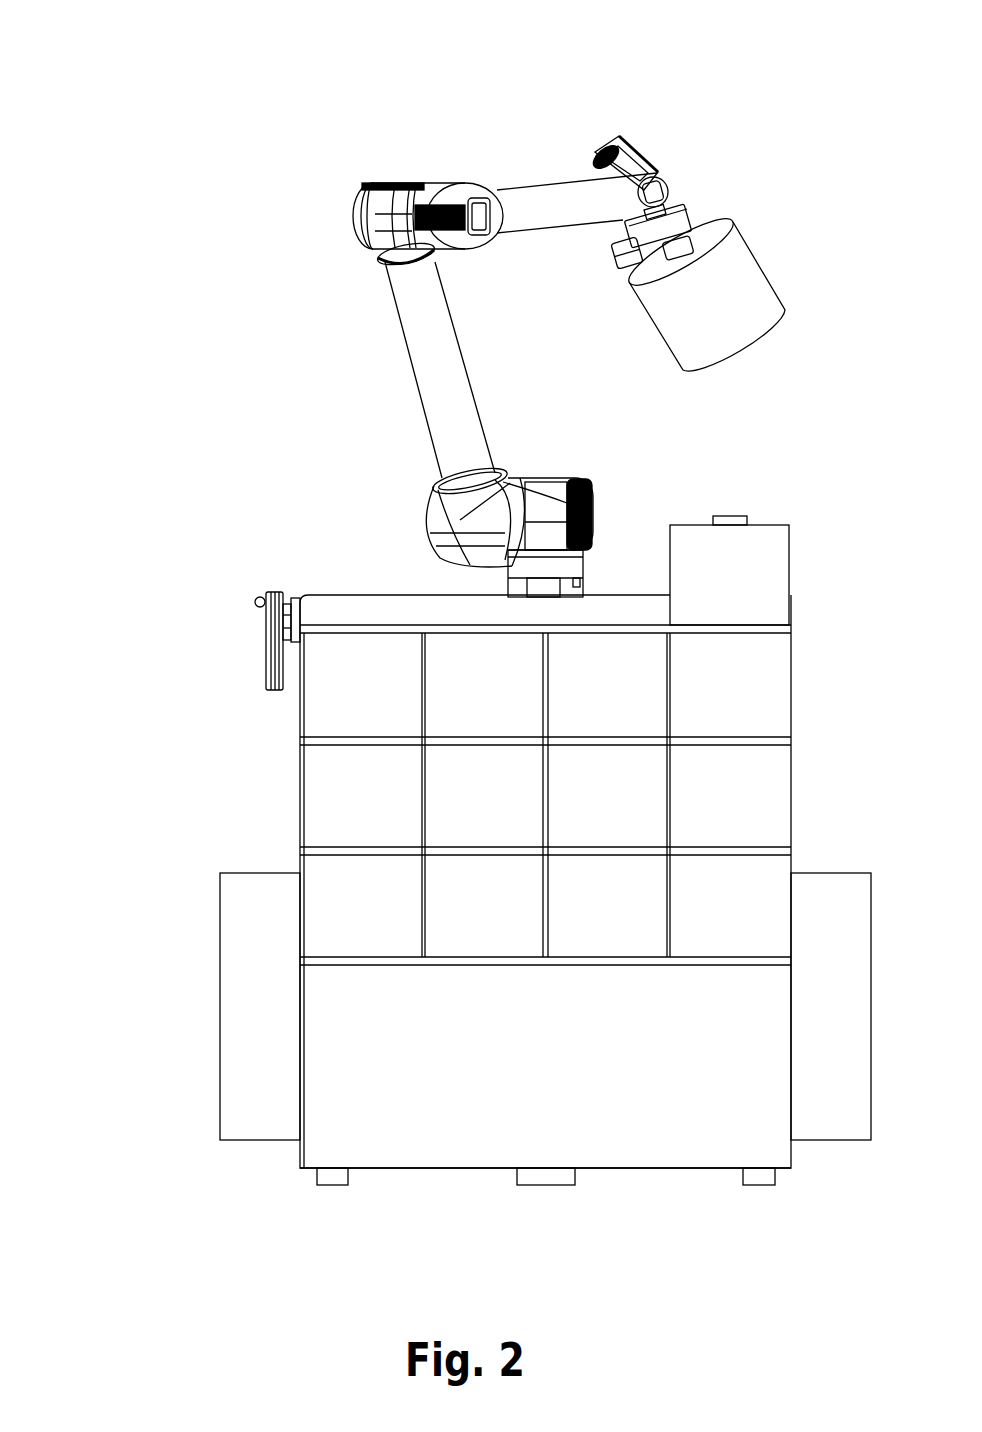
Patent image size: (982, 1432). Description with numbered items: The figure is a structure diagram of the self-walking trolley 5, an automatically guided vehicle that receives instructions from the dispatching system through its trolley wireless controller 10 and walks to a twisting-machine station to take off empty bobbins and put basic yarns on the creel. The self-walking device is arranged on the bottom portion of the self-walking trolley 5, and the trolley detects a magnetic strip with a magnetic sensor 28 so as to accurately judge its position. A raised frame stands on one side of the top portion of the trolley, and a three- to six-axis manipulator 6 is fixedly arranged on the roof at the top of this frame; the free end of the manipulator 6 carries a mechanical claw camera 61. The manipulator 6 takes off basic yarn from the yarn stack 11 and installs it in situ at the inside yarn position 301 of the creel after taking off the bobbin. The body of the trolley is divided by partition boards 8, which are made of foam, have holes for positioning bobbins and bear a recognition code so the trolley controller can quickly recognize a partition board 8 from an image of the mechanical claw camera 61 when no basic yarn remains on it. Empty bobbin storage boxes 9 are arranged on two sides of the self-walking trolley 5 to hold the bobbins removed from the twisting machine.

The self-walking trolley 5 is at (402, 597).
The manipulator 6 is at (420, 311).
The mechanical claw camera 61 is at (632, 252).
The inside yarn position 301 is at (723, 312).
The partition board 8 is at (300, 850).
The empty bobbin storage box 9 is at (265, 940).
The trolley wireless controller 10 is at (268, 650).
The yarn stack 11 is at (328, 797).
The magnetic sensor 28 is at (520, 1168).